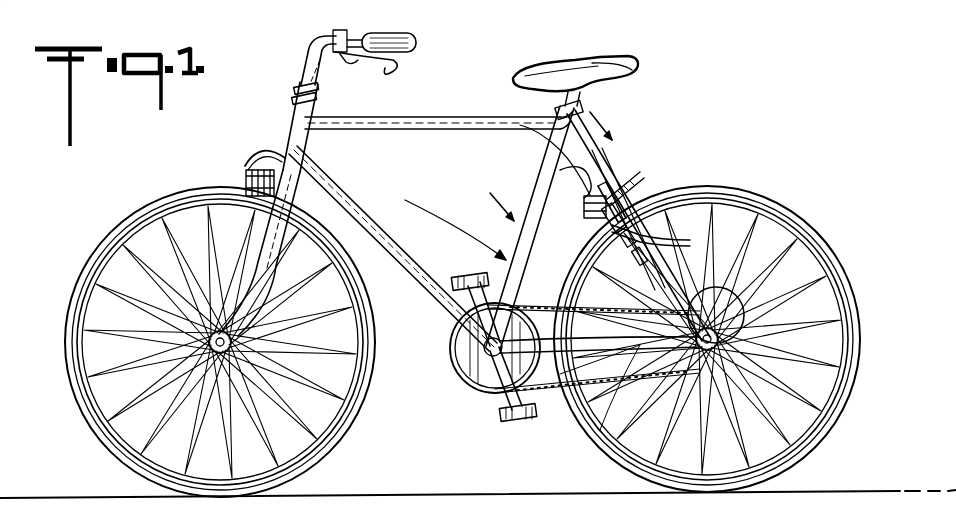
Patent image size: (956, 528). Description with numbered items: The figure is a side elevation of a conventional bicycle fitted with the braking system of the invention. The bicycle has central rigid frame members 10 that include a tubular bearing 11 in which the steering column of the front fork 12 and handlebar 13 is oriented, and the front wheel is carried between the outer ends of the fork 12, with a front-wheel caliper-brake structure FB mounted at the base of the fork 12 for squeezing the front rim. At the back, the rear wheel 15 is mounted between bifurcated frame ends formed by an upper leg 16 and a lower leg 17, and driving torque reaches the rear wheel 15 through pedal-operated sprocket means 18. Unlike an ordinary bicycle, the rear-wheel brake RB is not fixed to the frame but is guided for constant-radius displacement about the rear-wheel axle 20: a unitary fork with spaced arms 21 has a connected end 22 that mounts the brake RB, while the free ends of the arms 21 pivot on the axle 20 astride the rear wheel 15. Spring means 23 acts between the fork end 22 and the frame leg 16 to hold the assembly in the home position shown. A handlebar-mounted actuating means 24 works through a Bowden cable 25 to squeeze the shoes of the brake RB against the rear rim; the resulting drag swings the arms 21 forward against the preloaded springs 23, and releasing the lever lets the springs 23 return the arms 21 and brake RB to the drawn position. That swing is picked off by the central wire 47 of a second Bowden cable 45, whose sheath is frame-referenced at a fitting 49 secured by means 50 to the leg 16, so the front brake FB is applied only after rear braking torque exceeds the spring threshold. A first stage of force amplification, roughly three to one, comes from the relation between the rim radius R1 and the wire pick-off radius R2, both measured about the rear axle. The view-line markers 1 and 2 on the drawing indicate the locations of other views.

The central rigid frame members 10 is at (425, 140).
The tubular bearing 11 is at (310, 136).
The front fork 12 is at (300, 203).
The handlebar 13 is at (318, 40).
The rear wheel 15 is at (828, 228).
The upper leg 16 is at (660, 196).
The lower leg 17 is at (590, 393).
The pedal-operated sprocket means 18 is at (466, 390).
The rear-wheel axle 20 is at (838, 300).
The spaced arms 21 is at (698, 198).
The connected end 22 is at (560, 170).
The spring means 23 is at (634, 176).
The handlebar-mounted actuating means 24 is at (396, 68).
The Bowden cable 25 is at (298, 70).
The Bowden cable 45 is at (262, 146).
The central wire 47 is at (734, 214).
The fitting 49 is at (762, 224).
The securing means 50 is at (838, 262).
The front-wheel caliper-brake structure FB is at (240, 188).
The rear-wheel brake RB is at (582, 224).
The wheel-rim radius R1 is at (563, 377).
The Bowden-wire pick-off radius R2 is at (600, 430).
The section line 1 is at (511, 198).
The section line 2 is at (546, 169).